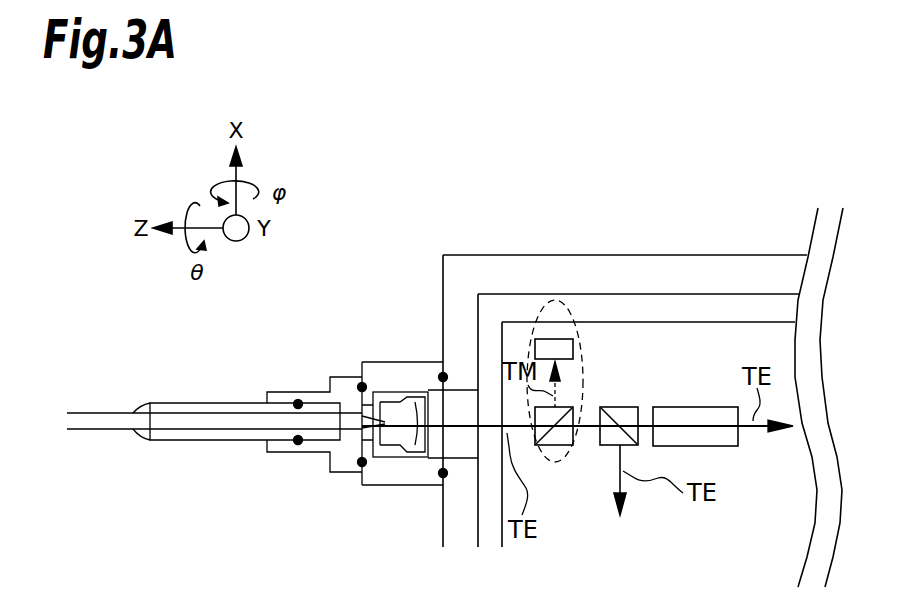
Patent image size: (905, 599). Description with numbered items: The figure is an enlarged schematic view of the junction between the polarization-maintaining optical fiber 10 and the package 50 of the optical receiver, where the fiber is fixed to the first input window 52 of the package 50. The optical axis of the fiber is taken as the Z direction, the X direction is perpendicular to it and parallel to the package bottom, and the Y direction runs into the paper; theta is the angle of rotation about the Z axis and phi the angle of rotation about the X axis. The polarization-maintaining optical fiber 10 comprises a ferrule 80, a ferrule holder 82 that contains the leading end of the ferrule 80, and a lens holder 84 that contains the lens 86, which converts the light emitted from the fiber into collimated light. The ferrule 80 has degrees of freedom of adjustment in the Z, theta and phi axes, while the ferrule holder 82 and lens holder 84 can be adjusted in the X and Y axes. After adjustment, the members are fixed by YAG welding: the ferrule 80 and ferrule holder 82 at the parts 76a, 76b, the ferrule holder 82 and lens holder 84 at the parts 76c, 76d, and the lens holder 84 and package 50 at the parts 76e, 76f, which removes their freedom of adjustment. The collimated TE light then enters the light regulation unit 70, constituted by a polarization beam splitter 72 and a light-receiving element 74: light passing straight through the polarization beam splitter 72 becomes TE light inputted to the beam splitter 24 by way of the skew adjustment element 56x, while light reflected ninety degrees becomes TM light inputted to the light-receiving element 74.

The polarization-maintaining optical fiber 10 is at (176, 390).
The beam splitter 24 is at (627, 406).
The package 50 is at (545, 257).
The first input window 52 is at (463, 450).
The skew adjustment element 56x is at (703, 406).
The light regulation unit 70 is at (553, 359).
The polarization beam splitter 72 is at (556, 446).
The light-receiving element 74 is at (573, 350).
The YAG welding part 76a is at (298, 399).
The YAG welding part 76b is at (297, 444).
The YAG welding part 76c is at (362, 383).
The YAG welding part 76d is at (360, 466).
The YAG welding part 76e is at (443, 373).
The YAG welding part 76f is at (443, 477).
The ferrule 80 is at (242, 403).
The ferrule holder 82 is at (347, 380).
The lens holder 84 is at (413, 373).
The lens 86 is at (397, 436).